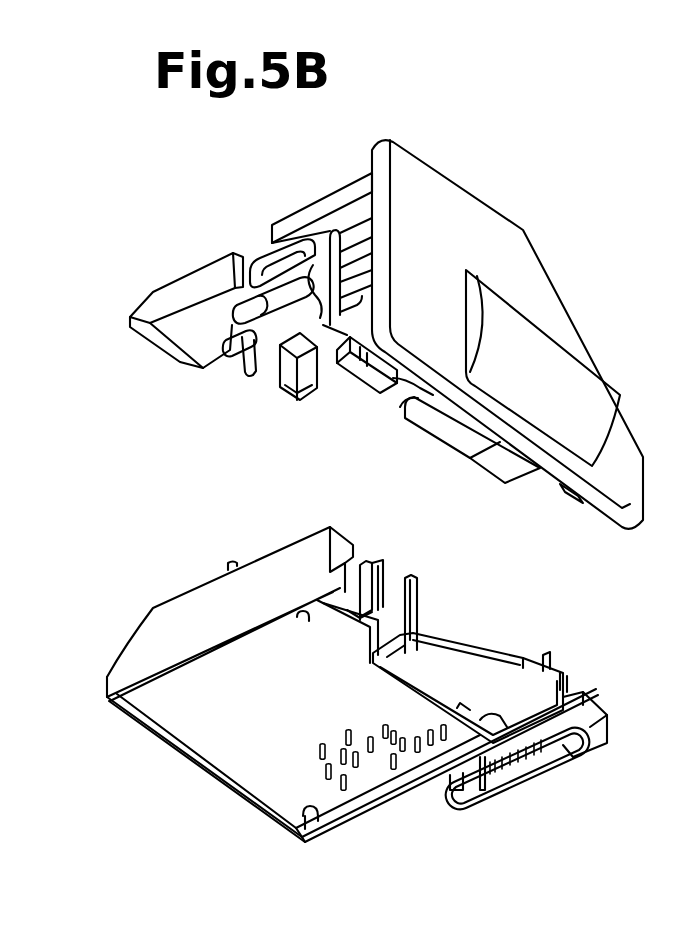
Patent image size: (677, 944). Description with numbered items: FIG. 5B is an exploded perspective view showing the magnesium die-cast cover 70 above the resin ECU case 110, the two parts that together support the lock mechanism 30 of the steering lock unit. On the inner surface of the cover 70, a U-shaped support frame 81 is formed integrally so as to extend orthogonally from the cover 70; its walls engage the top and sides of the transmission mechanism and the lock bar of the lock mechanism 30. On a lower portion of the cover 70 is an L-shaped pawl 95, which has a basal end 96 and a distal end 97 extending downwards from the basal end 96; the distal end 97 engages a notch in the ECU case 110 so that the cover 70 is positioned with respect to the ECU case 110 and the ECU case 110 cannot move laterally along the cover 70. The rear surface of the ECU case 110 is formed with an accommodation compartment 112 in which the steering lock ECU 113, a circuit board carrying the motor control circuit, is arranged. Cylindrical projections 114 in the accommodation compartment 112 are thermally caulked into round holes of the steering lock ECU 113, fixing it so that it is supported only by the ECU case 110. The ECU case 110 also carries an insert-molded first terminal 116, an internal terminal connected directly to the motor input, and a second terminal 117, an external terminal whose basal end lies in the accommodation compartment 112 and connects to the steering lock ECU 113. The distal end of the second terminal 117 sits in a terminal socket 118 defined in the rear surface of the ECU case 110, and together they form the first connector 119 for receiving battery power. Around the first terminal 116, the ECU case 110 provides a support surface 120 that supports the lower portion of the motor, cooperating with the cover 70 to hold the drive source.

The lock mechanism 30 is at (237, 377).
The cover 70 is at (533, 247).
The support frame 81 is at (310, 202).
The pawl 95 is at (373, 390).
The basal end 96 is at (367, 307).
The distal end 97 is at (335, 363).
The ECU case 110 is at (168, 600).
The accommodation compartment 112 is at (140, 710).
The steering lock ECU 113 is at (222, 750).
The cylindrical projections 114 is at (303, 620).
The first terminal 116 is at (547, 662).
The second terminal 117 is at (487, 795).
The terminal socket 118 is at (577, 767).
The first connector 119 is at (653, 870).
The support surface 120 is at (523, 657).